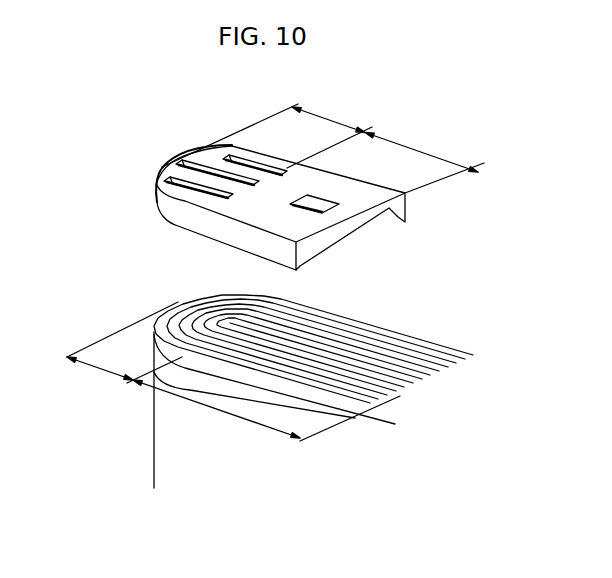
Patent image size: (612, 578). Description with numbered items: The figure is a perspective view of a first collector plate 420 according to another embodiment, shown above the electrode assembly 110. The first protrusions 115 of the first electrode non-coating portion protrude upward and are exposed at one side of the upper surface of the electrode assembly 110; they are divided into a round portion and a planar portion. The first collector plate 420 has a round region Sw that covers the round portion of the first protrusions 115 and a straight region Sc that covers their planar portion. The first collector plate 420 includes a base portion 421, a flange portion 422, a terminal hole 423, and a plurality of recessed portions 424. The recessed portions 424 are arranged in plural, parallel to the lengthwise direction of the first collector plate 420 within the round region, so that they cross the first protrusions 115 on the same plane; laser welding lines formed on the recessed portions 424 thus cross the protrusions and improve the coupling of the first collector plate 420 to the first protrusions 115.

The first collector plate 420 is at (148, 147).
The base portion 421 is at (307, 224).
The flange portion 422 is at (202, 227).
The terminal hole 423 is at (334, 207).
The recessed portions 424 is at (162, 167).
The first protrusions 115 is at (183, 300).
The electrode assembly 110 is at (166, 436).